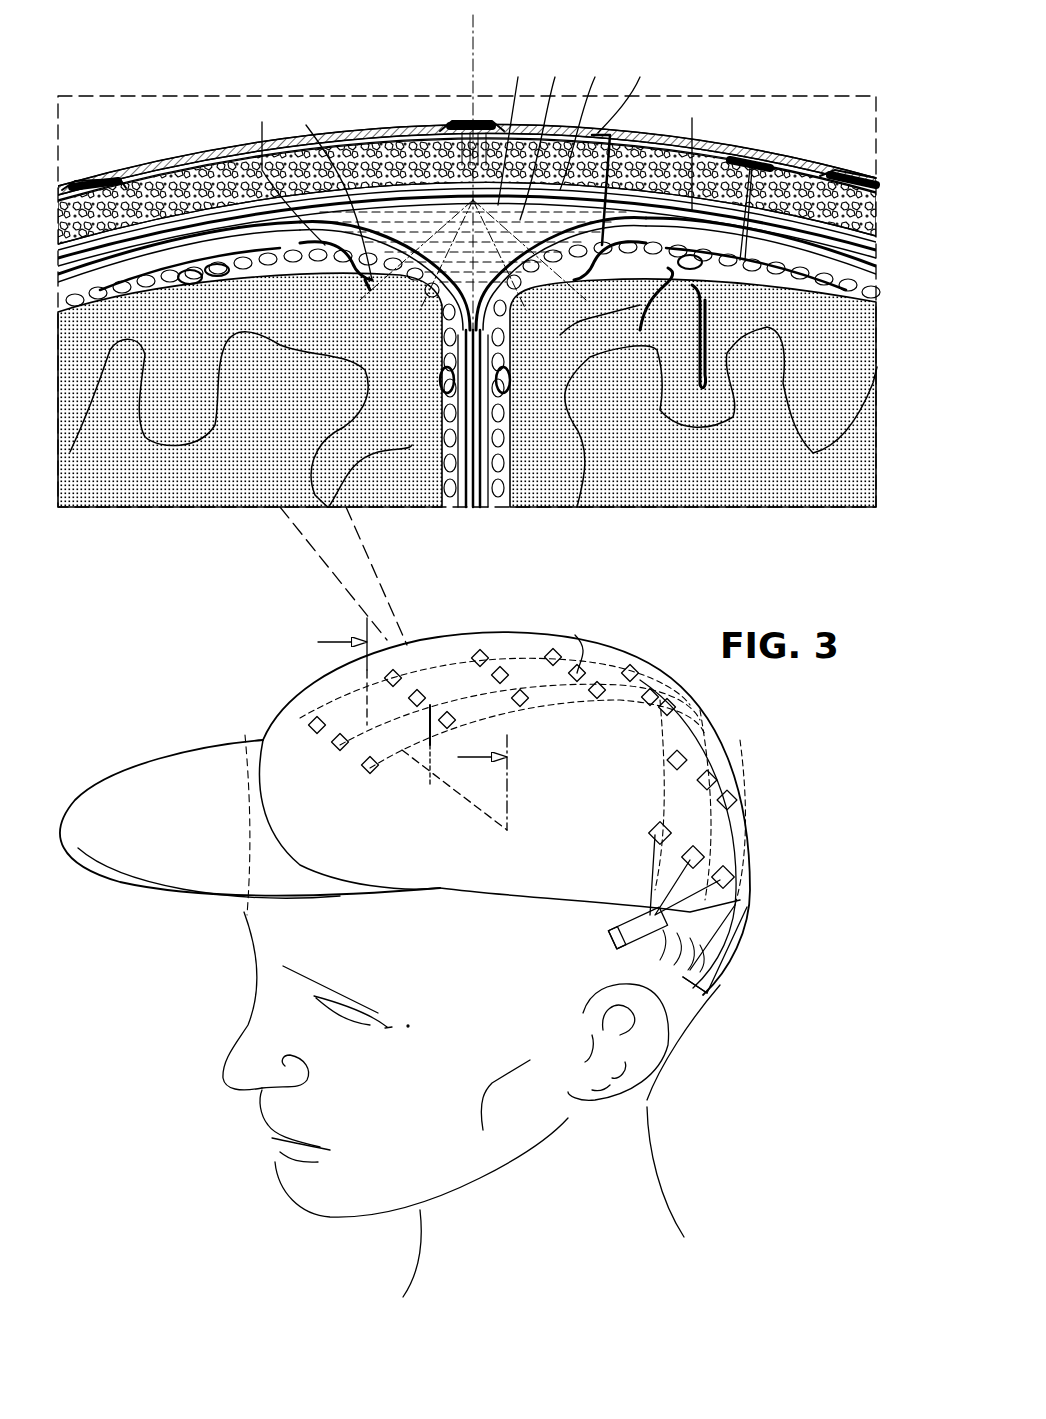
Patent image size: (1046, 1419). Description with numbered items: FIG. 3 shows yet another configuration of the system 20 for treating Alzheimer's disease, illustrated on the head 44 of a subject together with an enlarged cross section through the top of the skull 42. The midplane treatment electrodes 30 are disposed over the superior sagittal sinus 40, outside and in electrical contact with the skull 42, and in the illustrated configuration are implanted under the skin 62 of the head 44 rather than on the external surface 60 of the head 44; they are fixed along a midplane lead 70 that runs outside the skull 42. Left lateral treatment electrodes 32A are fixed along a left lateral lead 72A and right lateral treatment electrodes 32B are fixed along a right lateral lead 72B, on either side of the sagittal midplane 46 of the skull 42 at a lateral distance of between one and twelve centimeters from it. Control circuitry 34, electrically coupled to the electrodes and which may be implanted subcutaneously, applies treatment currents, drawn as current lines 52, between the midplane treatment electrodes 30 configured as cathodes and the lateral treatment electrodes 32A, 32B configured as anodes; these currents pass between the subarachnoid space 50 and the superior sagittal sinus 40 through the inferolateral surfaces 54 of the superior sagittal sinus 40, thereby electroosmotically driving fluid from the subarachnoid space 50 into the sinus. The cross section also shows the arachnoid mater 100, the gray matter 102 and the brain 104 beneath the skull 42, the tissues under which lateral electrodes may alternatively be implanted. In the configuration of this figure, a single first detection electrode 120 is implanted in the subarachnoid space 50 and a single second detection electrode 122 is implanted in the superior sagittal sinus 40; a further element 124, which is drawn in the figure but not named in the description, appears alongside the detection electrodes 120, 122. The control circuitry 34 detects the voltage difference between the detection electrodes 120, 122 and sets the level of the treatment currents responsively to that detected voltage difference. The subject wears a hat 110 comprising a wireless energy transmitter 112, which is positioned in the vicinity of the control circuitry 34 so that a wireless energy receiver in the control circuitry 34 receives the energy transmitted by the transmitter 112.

The system 20 is at (460, 943).
The midplane treatment electrodes 30 is at (452, 118).
The left lateral treatment electrodes 32A is at (845, 170).
The right lateral treatment electrodes 32B is at (82, 180).
The control circuitry 34 is at (612, 930).
The superior sagittal sinus 40 is at (467, 263).
The skull 42 is at (740, 160).
The head 44 is at (249, 835).
The sagittal midplane 46 is at (477, 50).
The subarachnoid space 50 is at (380, 300).
The current lines 52 is at (402, 166).
The inferolateral surfaces 54 is at (473, 170).
The external surface 60 is at (538, 136).
The skin 62 is at (581, 120).
The midplane lead 70 is at (365, 768).
The left lateral lead 72A is at (522, 705).
The right lateral lead 72B is at (500, 668).
The arachnoid mater 100 is at (440, 305).
The gray matter 102 is at (199, 349).
The brain 104 is at (845, 455).
The hat 110 is at (452, 892).
The wireless energy transmitter 112 is at (720, 985).
The single first detection electrode 120 is at (725, 300).
The single second detection electrode 122 is at (600, 290).
The lead 124 is at (607, 361).